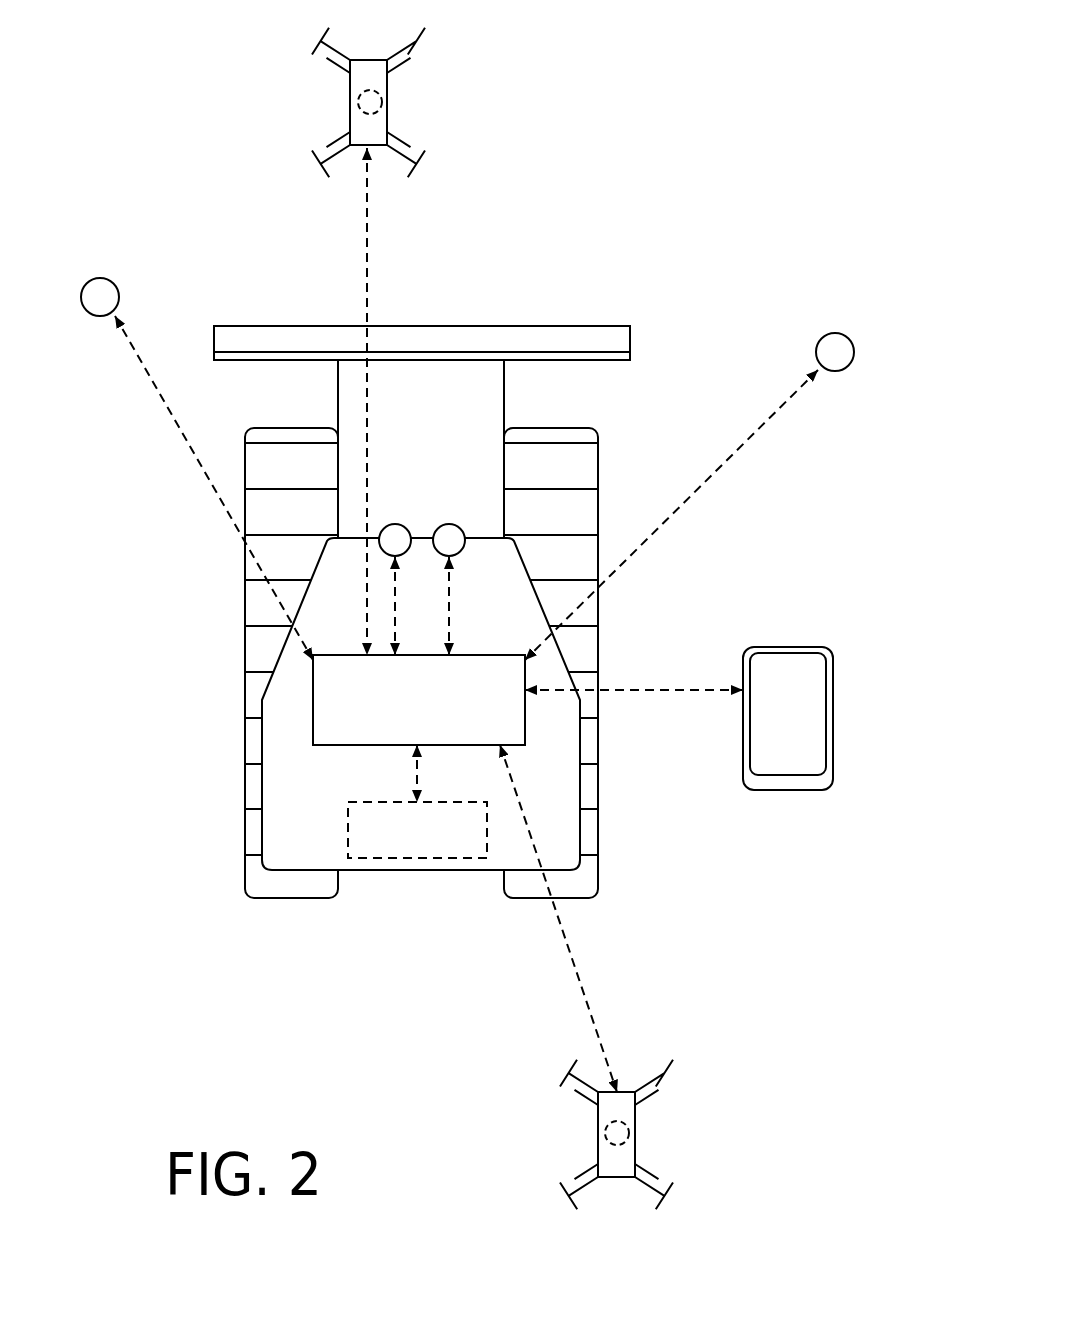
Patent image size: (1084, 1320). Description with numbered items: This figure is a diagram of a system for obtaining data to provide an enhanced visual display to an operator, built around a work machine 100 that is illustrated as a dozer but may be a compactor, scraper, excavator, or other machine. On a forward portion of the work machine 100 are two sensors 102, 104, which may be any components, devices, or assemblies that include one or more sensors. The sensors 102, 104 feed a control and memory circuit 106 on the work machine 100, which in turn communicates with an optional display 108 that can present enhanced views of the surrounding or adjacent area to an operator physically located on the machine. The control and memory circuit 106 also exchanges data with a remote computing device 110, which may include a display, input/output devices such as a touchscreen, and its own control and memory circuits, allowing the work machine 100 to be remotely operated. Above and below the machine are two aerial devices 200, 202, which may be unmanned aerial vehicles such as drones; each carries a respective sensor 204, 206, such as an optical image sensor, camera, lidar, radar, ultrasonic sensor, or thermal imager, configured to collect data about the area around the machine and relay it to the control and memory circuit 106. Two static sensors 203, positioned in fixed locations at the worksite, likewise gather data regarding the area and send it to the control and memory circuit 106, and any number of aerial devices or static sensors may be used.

The work machine 100 is at (606, 290).
The sensor 102 is at (398, 523).
The sensor 104 is at (452, 523).
The control and memory circuit 106 is at (483, 655).
The display 108 is at (370, 802).
The remote computing device 110 is at (805, 647).
The aerial device 200 is at (388, 112).
The aerial device 202 is at (635, 1145).
The static sensors 203 is at (106, 278).
The sensor 204 is at (358, 101).
The sensor 206 is at (605, 1133).